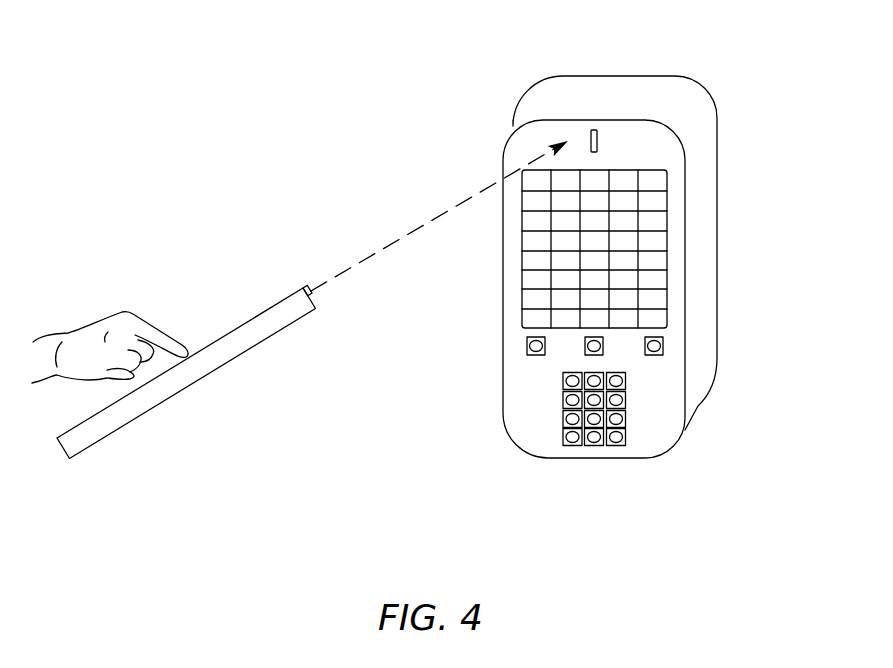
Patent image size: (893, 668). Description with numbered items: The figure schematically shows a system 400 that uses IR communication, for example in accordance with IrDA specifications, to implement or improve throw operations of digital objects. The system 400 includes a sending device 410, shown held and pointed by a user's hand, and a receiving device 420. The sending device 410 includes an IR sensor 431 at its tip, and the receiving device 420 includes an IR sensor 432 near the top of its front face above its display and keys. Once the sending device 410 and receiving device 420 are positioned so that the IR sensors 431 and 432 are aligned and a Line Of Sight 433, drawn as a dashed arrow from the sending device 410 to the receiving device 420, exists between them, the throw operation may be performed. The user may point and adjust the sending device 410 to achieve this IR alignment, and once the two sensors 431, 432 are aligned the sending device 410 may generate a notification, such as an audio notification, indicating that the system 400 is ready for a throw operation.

The system 400 is at (422, 437).
The sending device 410 is at (255, 317).
The receiving device 420 is at (698, 242).
The IR sensor 431 is at (307, 287).
The IR sensor 432 is at (593, 130).
The Line Of Sight (LOS) 433 is at (440, 215).